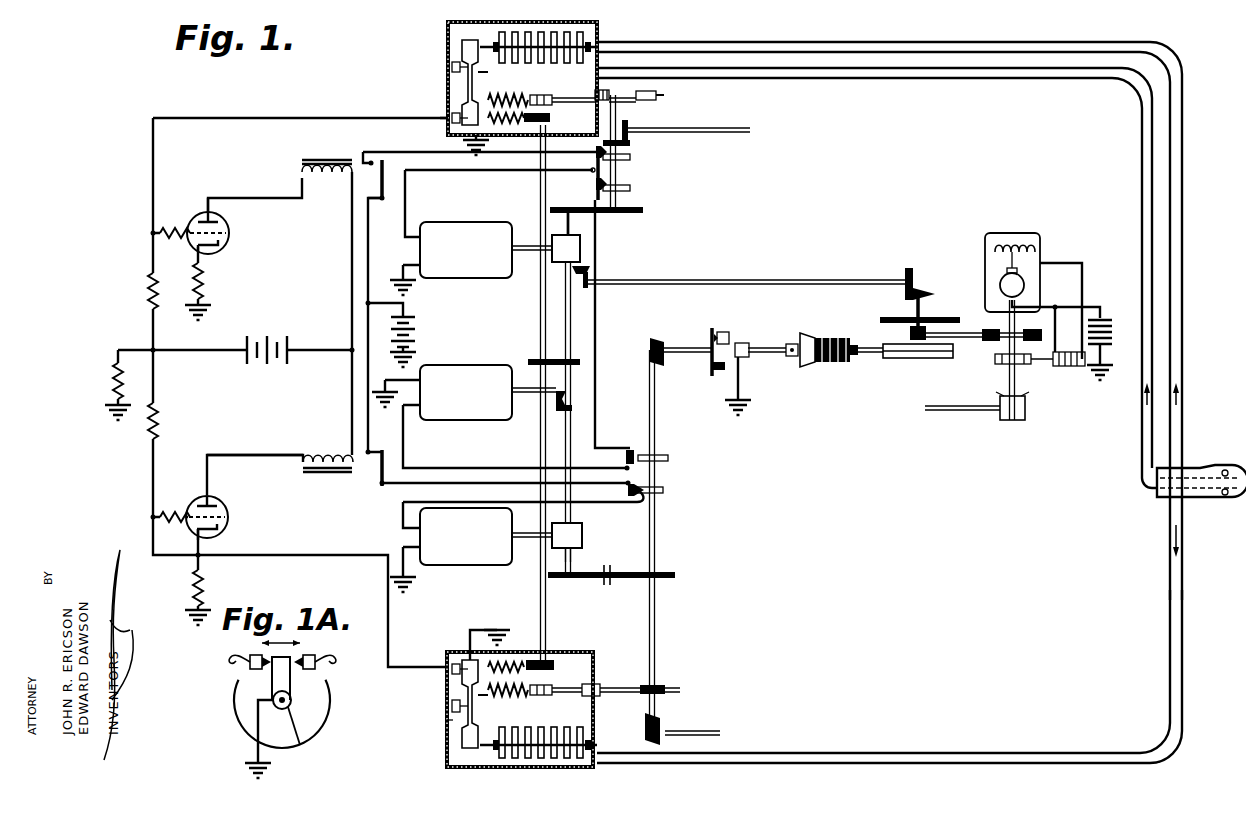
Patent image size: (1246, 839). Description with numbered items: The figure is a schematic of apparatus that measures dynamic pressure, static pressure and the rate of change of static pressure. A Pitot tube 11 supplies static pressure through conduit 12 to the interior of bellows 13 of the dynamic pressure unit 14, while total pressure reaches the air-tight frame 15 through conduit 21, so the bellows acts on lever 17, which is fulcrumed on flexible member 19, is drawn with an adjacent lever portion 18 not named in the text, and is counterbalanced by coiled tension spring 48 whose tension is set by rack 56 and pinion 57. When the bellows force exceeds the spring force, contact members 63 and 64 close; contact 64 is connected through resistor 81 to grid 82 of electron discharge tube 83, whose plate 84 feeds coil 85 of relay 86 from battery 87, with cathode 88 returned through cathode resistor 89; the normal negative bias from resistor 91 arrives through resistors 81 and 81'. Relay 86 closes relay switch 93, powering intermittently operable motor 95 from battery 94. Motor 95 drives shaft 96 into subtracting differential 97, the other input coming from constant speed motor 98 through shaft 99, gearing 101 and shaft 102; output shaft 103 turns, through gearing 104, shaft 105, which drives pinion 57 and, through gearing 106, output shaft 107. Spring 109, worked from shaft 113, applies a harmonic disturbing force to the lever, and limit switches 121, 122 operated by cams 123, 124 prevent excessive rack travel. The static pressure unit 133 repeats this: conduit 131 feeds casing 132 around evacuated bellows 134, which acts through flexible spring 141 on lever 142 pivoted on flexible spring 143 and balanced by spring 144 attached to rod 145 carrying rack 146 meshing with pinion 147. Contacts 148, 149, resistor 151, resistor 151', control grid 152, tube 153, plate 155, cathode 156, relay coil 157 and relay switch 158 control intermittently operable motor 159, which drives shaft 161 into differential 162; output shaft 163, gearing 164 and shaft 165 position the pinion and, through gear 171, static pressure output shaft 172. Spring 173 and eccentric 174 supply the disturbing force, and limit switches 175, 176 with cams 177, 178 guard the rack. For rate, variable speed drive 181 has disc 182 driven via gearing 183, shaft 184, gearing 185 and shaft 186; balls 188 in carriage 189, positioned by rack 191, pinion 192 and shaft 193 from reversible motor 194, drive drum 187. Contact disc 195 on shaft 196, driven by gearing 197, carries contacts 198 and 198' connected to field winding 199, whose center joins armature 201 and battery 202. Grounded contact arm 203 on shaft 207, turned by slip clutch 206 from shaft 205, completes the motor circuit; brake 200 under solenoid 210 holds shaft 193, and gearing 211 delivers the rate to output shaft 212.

In FIG. 1, the Pitot tube 11 is at (1190, 500).
In FIG. 1, the conduit 12 is at (1182, 236).
In FIG. 1, the bellows 13 is at (568, 32).
In FIG. 1, the dynamic pressure unit 14 is at (446, 31).
In FIG. 1, the frame 15 is at (452, 100).
In FIG. 1, the lever 17 is at (483, 70).
In FIG. 1, the armature 18 is at (470, 42).
In FIG. 1, the flexible member 19 is at (452, 67).
In FIG. 1, the conduit 21 is at (1142, 186).
In FIG. 1, the coiled tension spring 48 is at (520, 100).
In FIG. 1, the rack 56 is at (650, 96).
In FIG. 1, the pinion 57 is at (608, 95).
In FIG. 1, the contact member 63 is at (472, 140).
In FIG. 1, the contact member 64 is at (448, 120).
In FIG. 1, the resistor 81 is at (175, 213).
In FIG. 1, the resistor 81' is at (132, 291).
In FIG. 1, the grid 82 is at (228, 234).
In FIG. 1, the electron discharge tube 83 is at (206, 214).
In FIG. 1, the plate 84 is at (220, 224).
In FIG. 1, the coil 85 is at (325, 183).
In FIG. 1, the relay 86 is at (356, 148).
In FIG. 1, the battery 87 is at (267, 355).
In FIG. 1, the cathode 88 is at (216, 248).
In FIG. 1, the cathode resistor 89 is at (200, 276).
In FIG. 1, the resistor 91 is at (116, 380).
In FIG. 1, the relay switch 93 is at (384, 180).
In FIG. 1, the battery 94 is at (412, 326).
In FIG. 1, the intermittently operable motor 95 is at (460, 278).
In FIG. 1, the shaft 96 is at (520, 252).
In FIG. 1, the subtracting differential 97 is at (582, 248).
In FIG. 1, the constant speed motor 98 is at (457, 420).
In FIG. 1, the shaft 99 is at (523, 392).
In FIG. 1, the gearing 101 is at (560, 410).
In FIG. 1, the shaft 102 is at (572, 323).
In FIG. 1, the shaft 103 is at (566, 222).
In FIG. 1, the gearing 104 is at (606, 212).
In FIG. 1, the shaft 105 is at (616, 170).
In FIG. 1, the gearing 106 is at (630, 143).
In FIG. 1, the shaft 107 is at (750, 128).
In FIG. 1, the spring 109 is at (530, 124).
In FIG. 1, the shaft 113 is at (540, 322).
In FIG. 1, the limit switch 121 is at (596, 152).
In FIG. 1, the limit switch 122 is at (596, 184).
In FIG. 1, the cam 123 is at (630, 157).
In FIG. 1, the cam 124 is at (630, 188).
In FIG. 1, the conduit 131 is at (1180, 590).
In FIG. 1, the air-tight casing 132 is at (446, 744).
In FIG. 1, the static pressure unit 133 is at (445, 726).
In FIG. 1, the bellows 134 is at (575, 760).
In FIG. 1, the flexible spring 141 is at (468, 755).
In FIG. 1, the lever 142 is at (478, 700).
In FIG. 1, the flexible spring 143 is at (452, 706).
In FIG. 1, the spring 144 is at (532, 697).
In FIG. 1, the rod 145 is at (600, 686).
In FIG. 1, the rack 146 is at (672, 688).
In FIG. 1, the pinion 147 is at (660, 688).
In FIG. 1, the contact 148 is at (470, 630).
In FIG. 1, the contact 149 is at (466, 656).
In FIG. 1, the resistor 151 is at (175, 498).
In FIG. 1, the resistor 151' is at (179, 421).
In FIG. 1, the control grid 152 is at (229, 518).
In FIG. 1, the electron discharge tube 153 is at (218, 536).
In FIG. 1, the plate 155 is at (215, 500).
In FIG. 1, the cathode 156 is at (198, 538).
In FIG. 1, the relay coil 157 is at (327, 455).
In FIG. 1, the relay switch 158 is at (380, 484).
In FIG. 1, the intermittently operable motor 159 is at (465, 560).
In FIG. 1, the shaft 161 is at (532, 540).
In FIG. 1, the differential 162 is at (585, 533).
In FIG. 1, the output shaft 163 is at (574, 560).
In FIG. 1, the gearing 164 is at (578, 578).
In FIG. 1, the shaft 165 is at (655, 605).
In FIG. 1, the gear 171 is at (662, 722).
In FIG. 1, the static pressure output shaft 172 is at (716, 733).
In FIG. 1, the spring 173 is at (504, 660).
In FIG. 1, the eccentric 174 is at (550, 660).
In FIG. 1, the limit switch 175 is at (630, 454).
In FIG. 1, the limit switch 176 is at (640, 503).
In FIG. 1, the cam 177 is at (660, 457).
In FIG. 1, the cam 178 is at (660, 490).
In FIG. 1, the variable speed drive 181 is at (919, 312).
In FIG. 1, the disc 182 is at (888, 320).
In FIG. 1, the gearing 183 is at (590, 270).
In FIG. 1, the shaft 184 is at (825, 280).
In FIG. 1, the gearing 185 is at (916, 276).
In FIG. 1, the shaft 186 is at (910, 296).
In FIG. 1, the driven drum 187 is at (898, 358).
In FIG. 1, the balls 188 is at (910, 358).
In FIG. 1, the carriage 189 is at (930, 330).
In FIG. 1, the rack 191 is at (990, 340).
In FIG. 1, the pinion 192 is at (1047, 307).
In FIG. 1, the shaft 193 is at (1004, 332).
In FIG. 1, the reversible motor 194 is at (1041, 240).
In FIG. 1, the contact disc 195 is at (710, 325).
In FIG. 1A, the contact disc 195 is at (246, 729).
In FIG. 1, the shaft 196 is at (712, 368).
In FIG. 1, the gearing 197 is at (650, 348).
In FIG. 1, the contact 198 is at (713, 388).
In FIG. 1A, the contact 198 is at (233, 674).
In FIG. 1, the contact 198' is at (737, 319).
In FIG. 1A, the contact 198' is at (331, 673).
In FIG. 1, the two-part field winding 199 is at (996, 250).
In FIG. 1, the brake 200 is at (1034, 366).
In FIG. 1, the armature 201 is at (1024, 283).
In FIG. 1, the battery 202 is at (1108, 317).
In FIG. 1, the grounded contact radial arm 203 is at (748, 343).
In FIG. 1A, the grounded contact radial arm 203 is at (292, 690).
In FIG. 1, the shaft 205 is at (858, 356).
In FIG. 1, the slip clutch 206 is at (826, 336).
In FIG. 1, the shaft 207 is at (790, 356).
In FIG. 1A, the shaft 207 is at (300, 745).
In FIG. 1, the solenoid 210 is at (1068, 368).
In FIG. 1, the gearing 211 is at (1014, 418).
In FIG. 1, the static pressure rate output shaft 212 is at (965, 410).